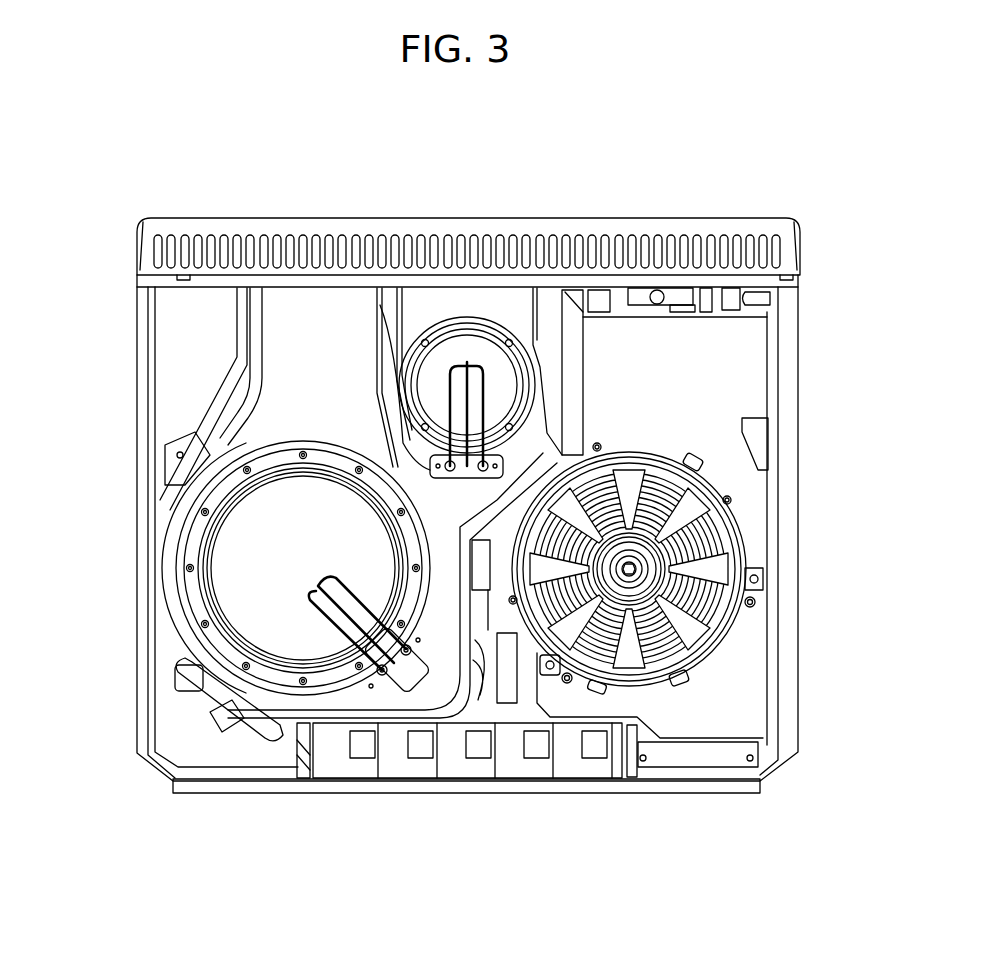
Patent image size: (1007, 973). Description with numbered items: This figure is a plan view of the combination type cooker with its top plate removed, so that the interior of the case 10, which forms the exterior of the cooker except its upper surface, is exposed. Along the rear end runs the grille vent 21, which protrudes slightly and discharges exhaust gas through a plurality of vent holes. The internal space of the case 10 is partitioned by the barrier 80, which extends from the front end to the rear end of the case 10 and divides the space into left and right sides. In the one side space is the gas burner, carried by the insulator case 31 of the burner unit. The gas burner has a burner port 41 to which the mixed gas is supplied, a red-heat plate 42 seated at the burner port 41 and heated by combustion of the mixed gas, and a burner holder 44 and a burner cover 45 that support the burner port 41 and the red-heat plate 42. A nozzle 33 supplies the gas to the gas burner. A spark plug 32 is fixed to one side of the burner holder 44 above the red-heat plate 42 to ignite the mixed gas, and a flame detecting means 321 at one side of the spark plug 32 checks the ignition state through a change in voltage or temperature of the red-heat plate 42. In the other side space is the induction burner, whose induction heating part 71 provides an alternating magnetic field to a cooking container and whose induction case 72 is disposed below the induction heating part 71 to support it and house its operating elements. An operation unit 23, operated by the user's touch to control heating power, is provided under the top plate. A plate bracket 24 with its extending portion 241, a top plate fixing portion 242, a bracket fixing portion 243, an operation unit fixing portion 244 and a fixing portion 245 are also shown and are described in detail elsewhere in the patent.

The case 10 is at (603, 800).
The grille vent 21 is at (668, 205).
The operation unit 23 is at (510, 783).
The plate bracket 24 is at (173, 350).
The extending portion 241 is at (190, 680).
The top plate fixing portion 242 is at (163, 325).
The bracket fixing portion 243 is at (237, 302).
The operation unit fixing portion 244 is at (240, 777).
The fixing portion 245 is at (320, 770).
The insulator case 31 is at (433, 687).
The spark plug 32 is at (405, 672).
The flame detecting means 321 is at (370, 693).
The nozzle 33 is at (195, 705).
The burner port 41 is at (205, 633).
The red-heat plate 42 is at (230, 585).
The burner holder 44 is at (190, 537).
The burner cover 45 is at (273, 380).
The induction heating part 71 is at (715, 663).
The induction case 72 is at (755, 629).
The barrier 80 is at (592, 403).